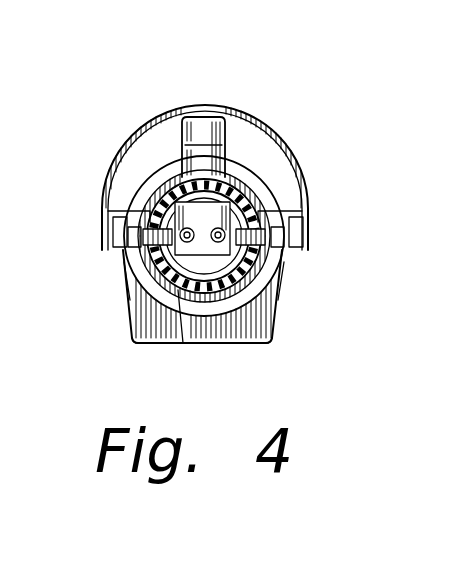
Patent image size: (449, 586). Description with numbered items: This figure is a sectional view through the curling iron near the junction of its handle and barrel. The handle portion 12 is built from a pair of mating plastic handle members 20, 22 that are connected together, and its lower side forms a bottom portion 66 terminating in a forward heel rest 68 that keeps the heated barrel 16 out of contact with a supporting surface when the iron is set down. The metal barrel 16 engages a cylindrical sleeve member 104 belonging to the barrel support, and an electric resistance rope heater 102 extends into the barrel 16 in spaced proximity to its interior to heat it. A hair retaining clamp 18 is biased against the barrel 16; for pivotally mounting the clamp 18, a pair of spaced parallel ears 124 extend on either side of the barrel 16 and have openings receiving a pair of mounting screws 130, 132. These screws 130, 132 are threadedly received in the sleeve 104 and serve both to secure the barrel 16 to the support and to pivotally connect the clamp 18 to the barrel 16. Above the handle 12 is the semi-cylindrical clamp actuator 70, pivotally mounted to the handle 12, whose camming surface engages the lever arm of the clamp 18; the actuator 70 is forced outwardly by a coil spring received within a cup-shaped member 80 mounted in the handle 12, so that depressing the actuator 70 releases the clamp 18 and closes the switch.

The handle portion 12 is at (279, 319).
The heated barrel 16 is at (128, 303).
The clamp 18 is at (250, 193).
The handle member 20 is at (122, 260).
The handle member 22 is at (286, 263).
The bottom portion 66 is at (130, 335).
The forward heel rest 68 is at (244, 344).
The clamp actuator 70 is at (128, 140).
The cup-shaped member 80 is at (165, 197).
The electric resistance rope heater 102 is at (108, 218).
The cylindrical sleeve member 104 is at (183, 320).
The ears 124 is at (128, 283).
The mounting screw 130 is at (284, 250).
The mounting screw 132 is at (122, 248).